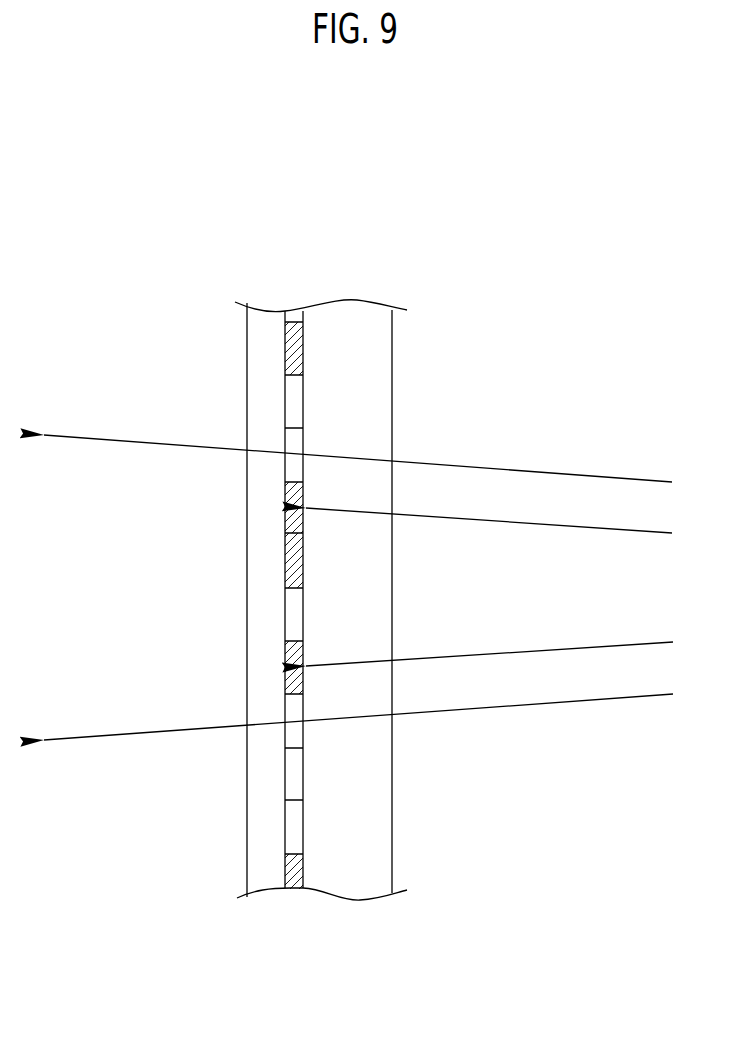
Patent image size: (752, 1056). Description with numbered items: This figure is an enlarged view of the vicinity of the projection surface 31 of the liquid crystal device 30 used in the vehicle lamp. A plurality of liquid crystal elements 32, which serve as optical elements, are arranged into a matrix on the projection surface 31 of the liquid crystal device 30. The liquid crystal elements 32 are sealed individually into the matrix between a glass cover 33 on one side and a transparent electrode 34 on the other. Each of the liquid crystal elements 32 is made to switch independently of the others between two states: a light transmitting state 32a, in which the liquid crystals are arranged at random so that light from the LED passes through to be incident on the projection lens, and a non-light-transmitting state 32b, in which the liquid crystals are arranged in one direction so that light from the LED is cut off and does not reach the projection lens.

The liquid crystal device 30 is at (347, 286).
The projection surface 31 is at (283, 352).
The liquid crystal element 32 is at (302, 395).
The light transmitting state 32a is at (302, 443).
The non-light-transmitting state 32b is at (307, 523).
The glass cover 33 is at (257, 827).
The transparent electrode 34 is at (368, 829).